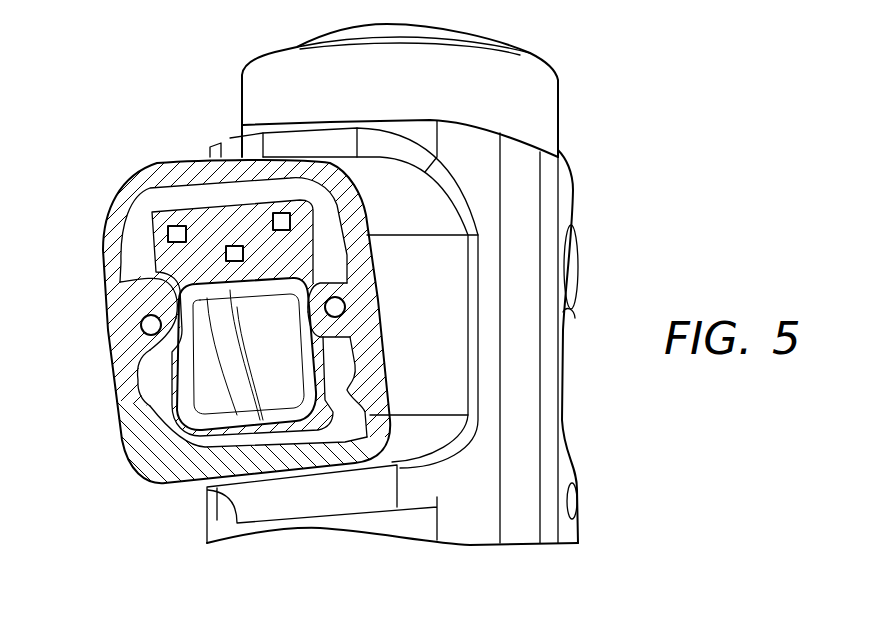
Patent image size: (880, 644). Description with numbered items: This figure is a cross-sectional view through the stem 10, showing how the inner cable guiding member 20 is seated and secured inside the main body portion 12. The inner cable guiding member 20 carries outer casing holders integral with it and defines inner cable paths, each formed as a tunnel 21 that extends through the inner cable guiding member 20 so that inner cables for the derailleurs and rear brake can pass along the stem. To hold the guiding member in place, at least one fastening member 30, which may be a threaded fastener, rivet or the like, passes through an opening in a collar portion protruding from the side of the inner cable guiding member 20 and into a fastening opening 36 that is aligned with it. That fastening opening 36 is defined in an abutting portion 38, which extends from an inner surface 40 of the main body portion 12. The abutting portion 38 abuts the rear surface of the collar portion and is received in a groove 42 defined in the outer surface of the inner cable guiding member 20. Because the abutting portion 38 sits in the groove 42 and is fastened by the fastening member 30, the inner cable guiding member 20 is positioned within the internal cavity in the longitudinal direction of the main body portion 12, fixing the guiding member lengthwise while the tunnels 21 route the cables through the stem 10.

The stem 10 is at (124, 132).
The main body portion 12 is at (230, 463).
The inner cable guiding member 20 is at (200, 222).
The tunnel 21 is at (283, 214).
The fastening member 30 is at (150, 325).
The fastening opening 36 is at (155, 340).
The abutting portion 38 is at (138, 402).
The inner surface 40 is at (356, 368).
The groove 42 is at (120, 282).